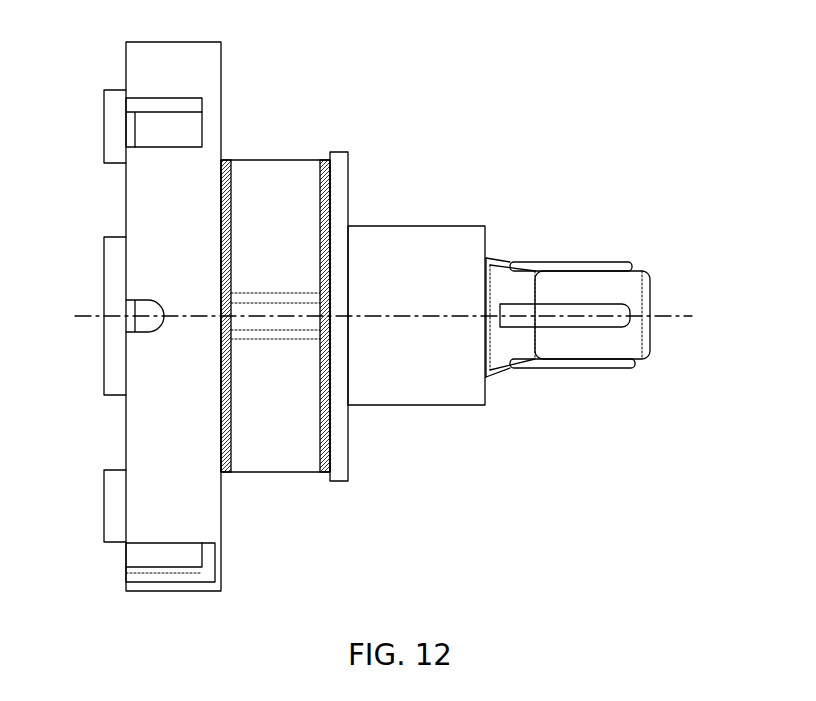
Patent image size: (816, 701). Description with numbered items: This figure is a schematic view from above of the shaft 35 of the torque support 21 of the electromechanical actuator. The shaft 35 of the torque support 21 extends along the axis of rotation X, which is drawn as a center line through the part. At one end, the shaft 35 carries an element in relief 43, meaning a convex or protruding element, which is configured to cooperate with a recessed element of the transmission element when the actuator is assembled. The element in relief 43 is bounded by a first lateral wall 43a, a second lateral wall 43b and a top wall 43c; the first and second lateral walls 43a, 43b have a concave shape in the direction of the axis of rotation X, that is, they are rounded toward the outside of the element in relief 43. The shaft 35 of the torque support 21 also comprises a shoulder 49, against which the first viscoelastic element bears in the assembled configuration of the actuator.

The torque support 21 is at (517, 125).
The shaft 35 is at (457, 257).
The element in relief 43 is at (627, 363).
The first lateral wall 43a is at (583, 305).
The second lateral wall 43b is at (537, 263).
The top wall 43c is at (563, 263).
The shoulder 49 is at (335, 478).
The axis of rotation X is at (400, 317).